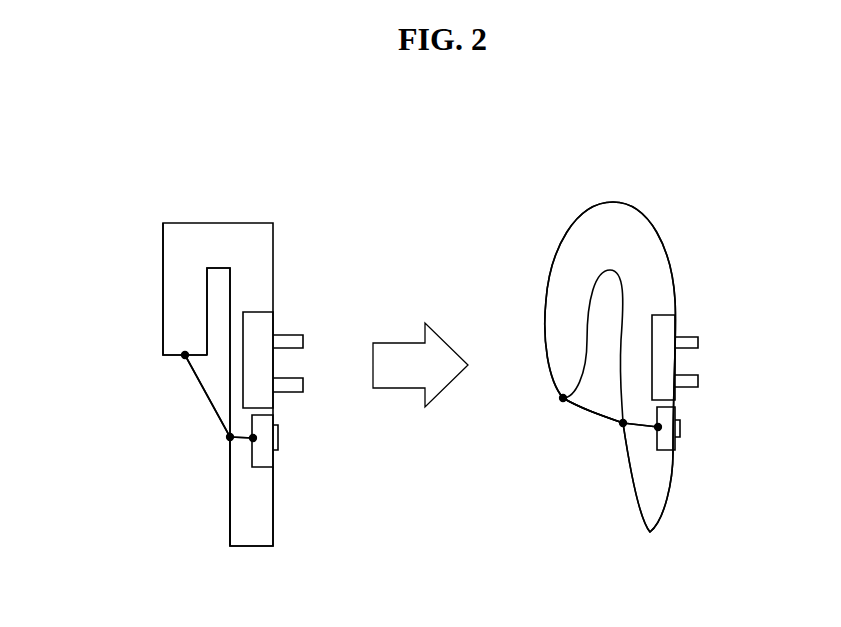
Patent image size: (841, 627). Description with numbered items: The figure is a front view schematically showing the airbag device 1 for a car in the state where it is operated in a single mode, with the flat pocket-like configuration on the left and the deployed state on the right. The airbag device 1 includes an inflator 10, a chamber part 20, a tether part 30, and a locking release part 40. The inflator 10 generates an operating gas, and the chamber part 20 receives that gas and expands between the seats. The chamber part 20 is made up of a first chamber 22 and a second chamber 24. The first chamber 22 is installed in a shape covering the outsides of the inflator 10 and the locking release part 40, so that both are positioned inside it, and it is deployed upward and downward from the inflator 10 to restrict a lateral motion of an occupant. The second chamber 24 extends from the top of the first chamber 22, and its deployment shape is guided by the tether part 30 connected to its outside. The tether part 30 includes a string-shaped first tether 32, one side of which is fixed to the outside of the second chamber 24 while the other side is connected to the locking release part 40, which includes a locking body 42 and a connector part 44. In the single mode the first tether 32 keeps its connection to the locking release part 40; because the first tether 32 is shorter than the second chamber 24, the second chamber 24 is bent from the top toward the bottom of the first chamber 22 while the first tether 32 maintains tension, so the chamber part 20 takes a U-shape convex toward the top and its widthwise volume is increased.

The airbag device 1 is at (690, 215).
The inflator 10 is at (265, 332).
The chamber part 20 is at (93, 324).
The first chamber 22 is at (228, 362).
The second chamber 24 is at (170, 330).
The tether part 30 is at (200, 430).
The first tether 32 is at (207, 397).
The locking release part 40 is at (262, 472).
The locking body 42 is at (265, 457).
The connector part 44 is at (250, 441).